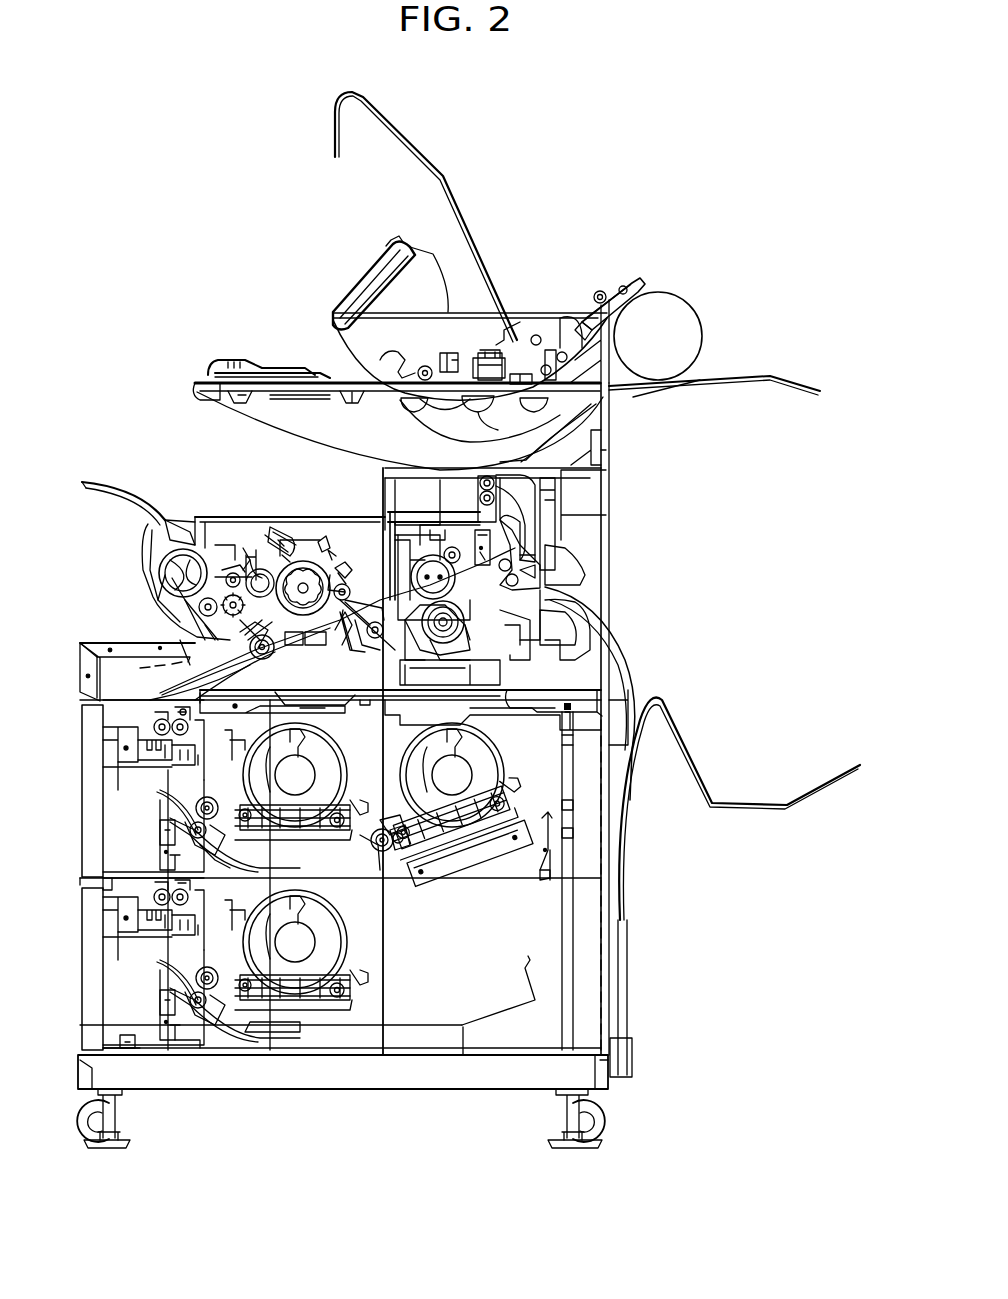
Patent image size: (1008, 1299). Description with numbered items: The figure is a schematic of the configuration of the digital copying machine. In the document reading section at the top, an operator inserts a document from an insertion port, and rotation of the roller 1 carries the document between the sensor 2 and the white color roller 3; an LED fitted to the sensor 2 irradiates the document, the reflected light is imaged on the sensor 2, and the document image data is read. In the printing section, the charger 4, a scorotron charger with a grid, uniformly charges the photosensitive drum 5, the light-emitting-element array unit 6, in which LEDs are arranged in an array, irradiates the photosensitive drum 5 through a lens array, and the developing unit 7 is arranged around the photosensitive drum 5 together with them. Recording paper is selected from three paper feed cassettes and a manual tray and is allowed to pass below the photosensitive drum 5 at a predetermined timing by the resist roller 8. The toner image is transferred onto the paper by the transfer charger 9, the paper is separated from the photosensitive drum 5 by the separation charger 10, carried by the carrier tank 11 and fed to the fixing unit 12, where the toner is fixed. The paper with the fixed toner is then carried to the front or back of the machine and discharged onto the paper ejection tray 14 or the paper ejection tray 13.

The roller 1 is at (432, 368).
The sensor 2 is at (485, 356).
The white color roller 3 is at (490, 398).
The charger 4 is at (315, 540).
The photosensitive drum 5 is at (340, 568).
The light-emitting-element array unit 6 is at (270, 530).
The developing unit 7 is at (240, 552).
The resist roller 8 is at (273, 650).
The transfer charger 9 is at (302, 646).
The separation charger 10 is at (324, 645).
The carrier tank 11 is at (378, 622).
The fixing unit 12 is at (547, 612).
The paper ejection tray 13 is at (565, 558).
The paper ejection tray 14 is at (476, 490).